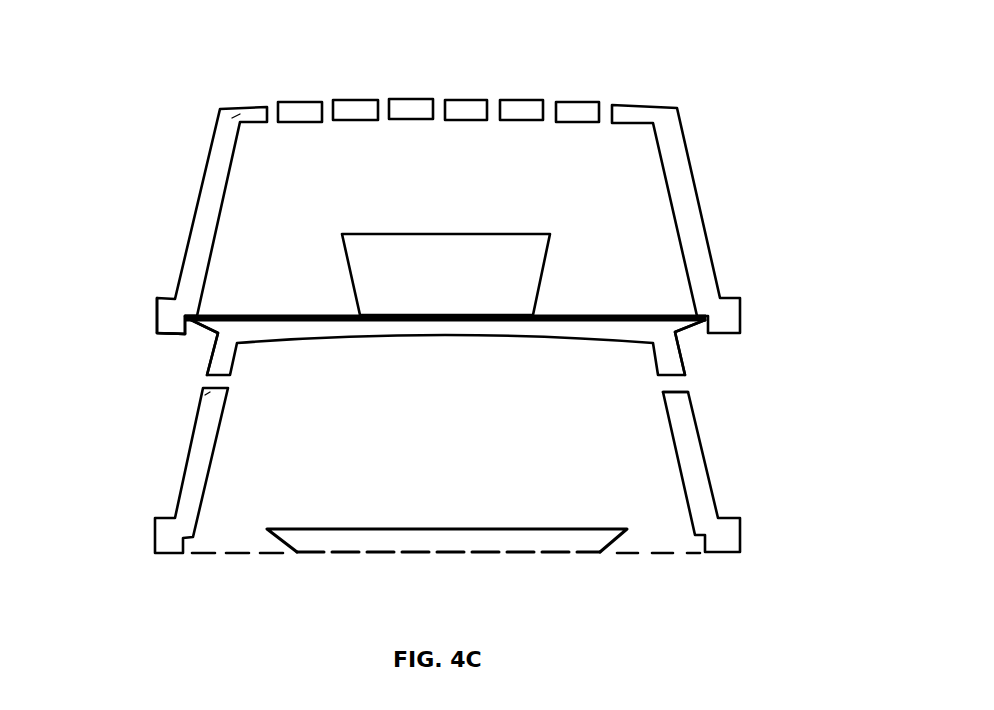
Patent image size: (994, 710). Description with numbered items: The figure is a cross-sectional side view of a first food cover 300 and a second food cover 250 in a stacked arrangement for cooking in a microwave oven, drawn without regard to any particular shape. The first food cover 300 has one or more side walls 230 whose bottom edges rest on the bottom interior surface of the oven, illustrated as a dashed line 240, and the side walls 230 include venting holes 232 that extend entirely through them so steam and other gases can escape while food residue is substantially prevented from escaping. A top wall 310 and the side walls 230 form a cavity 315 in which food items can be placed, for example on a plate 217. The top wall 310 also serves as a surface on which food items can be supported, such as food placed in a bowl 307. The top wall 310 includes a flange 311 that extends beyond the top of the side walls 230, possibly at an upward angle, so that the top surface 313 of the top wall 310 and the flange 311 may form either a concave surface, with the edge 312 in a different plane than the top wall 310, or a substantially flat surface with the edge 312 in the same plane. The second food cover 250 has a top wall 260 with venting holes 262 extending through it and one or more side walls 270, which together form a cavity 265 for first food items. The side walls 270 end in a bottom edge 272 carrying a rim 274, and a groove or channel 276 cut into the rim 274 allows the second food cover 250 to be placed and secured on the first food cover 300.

The plate 217 is at (500, 528).
The side walls 230 is at (690, 437).
The venting holes 232 is at (693, 395).
The bottom interior surface of the microwave oven 240 is at (638, 555).
The second food cover 250 is at (168, 202).
The top wall 260 is at (233, 120).
The venting holes 262 is at (330, 108).
The cavity 265 is at (446, 202).
The side walls 270 is at (690, 200).
The bottom edge 272 is at (157, 333).
The rim 274 is at (157, 313).
The groove or channel 276 is at (190, 322).
The first food cover 300 is at (152, 465).
The bowl 307 is at (480, 234).
The top wall 310 is at (545, 334).
The flange 311 is at (700, 324).
The edge 312 is at (187, 318).
The top surface 313 is at (263, 315).
The cavity 315 is at (453, 467).